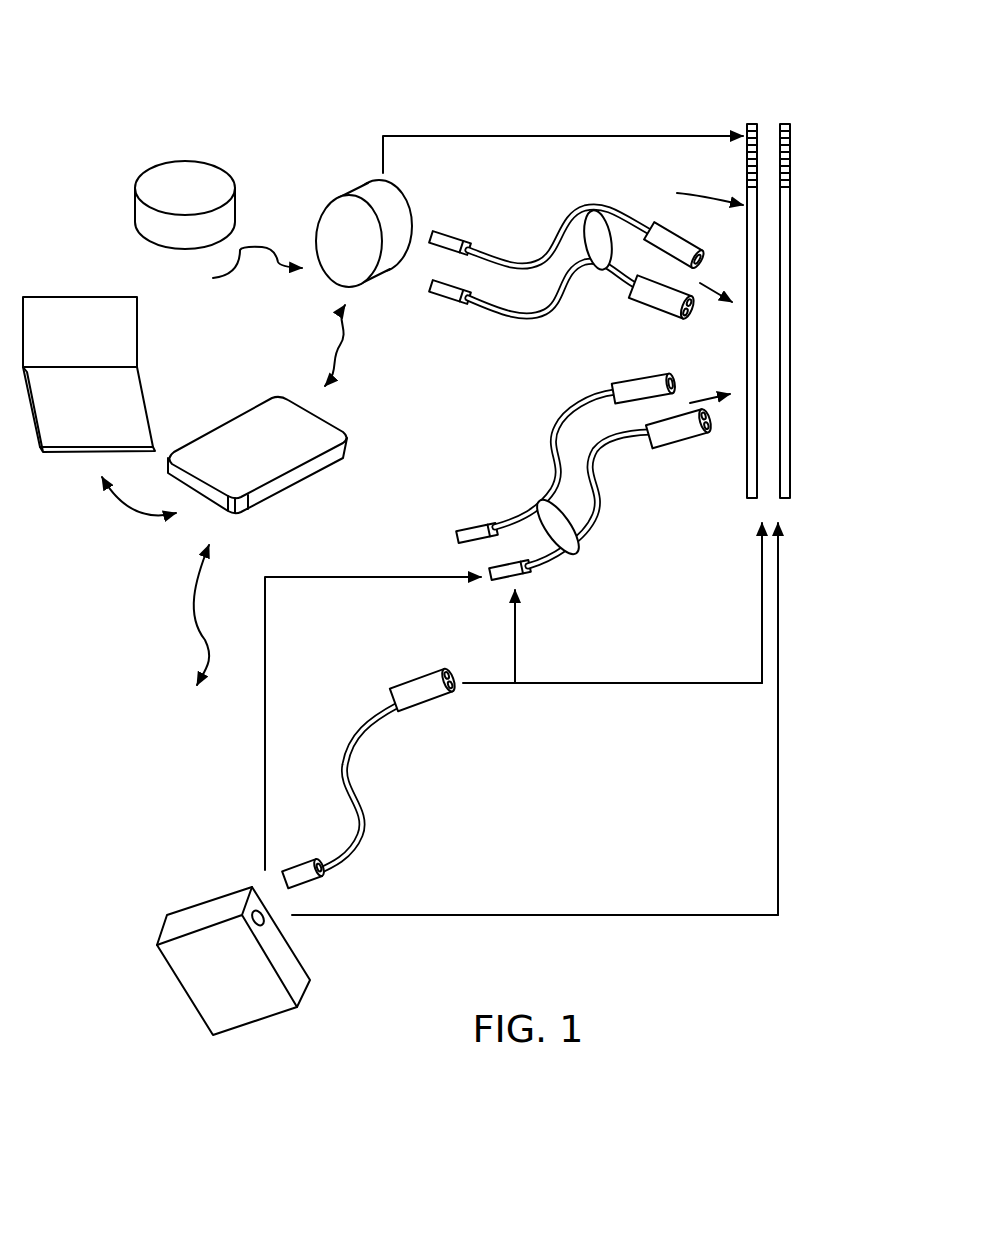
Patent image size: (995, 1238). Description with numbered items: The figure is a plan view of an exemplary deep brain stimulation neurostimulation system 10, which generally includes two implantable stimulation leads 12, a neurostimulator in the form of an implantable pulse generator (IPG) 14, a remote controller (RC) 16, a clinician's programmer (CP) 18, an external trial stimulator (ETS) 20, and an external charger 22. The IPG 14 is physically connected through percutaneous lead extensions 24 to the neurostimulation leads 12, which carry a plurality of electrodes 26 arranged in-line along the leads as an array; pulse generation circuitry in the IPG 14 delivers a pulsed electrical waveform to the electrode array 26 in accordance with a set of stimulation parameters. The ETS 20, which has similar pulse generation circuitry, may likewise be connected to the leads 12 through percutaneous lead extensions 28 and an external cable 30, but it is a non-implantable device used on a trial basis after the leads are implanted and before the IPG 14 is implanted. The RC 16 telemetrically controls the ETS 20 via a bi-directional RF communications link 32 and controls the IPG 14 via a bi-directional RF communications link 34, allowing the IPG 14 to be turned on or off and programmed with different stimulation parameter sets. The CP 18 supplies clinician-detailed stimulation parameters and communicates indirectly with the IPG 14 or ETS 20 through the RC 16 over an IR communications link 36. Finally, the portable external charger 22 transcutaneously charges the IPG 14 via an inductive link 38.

The DBS neurostimulation system 10 is at (540, 85).
The implantable stimulation lead 12 is at (767, 117).
The implantable pulse generator (IPG) 14 is at (345, 190).
The remote controller (RC) 16 is at (268, 418).
The clinician's programmer (CP) 18 is at (70, 310).
The External Trial Stimulator (ETS) 20 is at (205, 912).
The external charger 22 is at (185, 170).
The percutaneous lead extension 24 is at (592, 212).
The electrodes 26 is at (790, 192).
The percutaneous lead extension 28 is at (535, 505).
The external cable 30 is at (366, 722).
The bi-directional RF communications link 32 is at (200, 658).
The bi-directional RF communications link 34 is at (342, 348).
The IR communications link 36 is at (128, 503).
The inductive link 38 is at (242, 268).